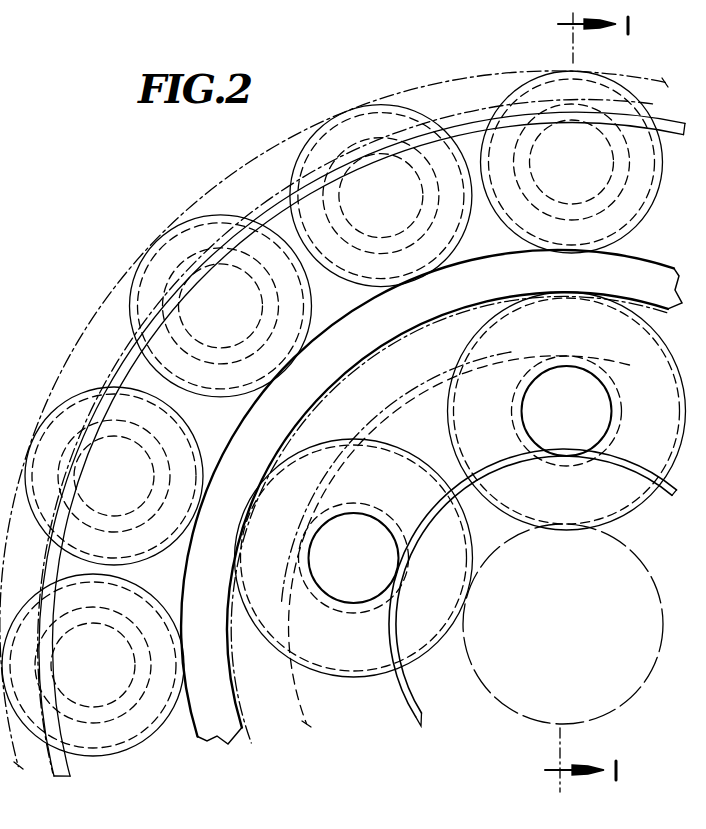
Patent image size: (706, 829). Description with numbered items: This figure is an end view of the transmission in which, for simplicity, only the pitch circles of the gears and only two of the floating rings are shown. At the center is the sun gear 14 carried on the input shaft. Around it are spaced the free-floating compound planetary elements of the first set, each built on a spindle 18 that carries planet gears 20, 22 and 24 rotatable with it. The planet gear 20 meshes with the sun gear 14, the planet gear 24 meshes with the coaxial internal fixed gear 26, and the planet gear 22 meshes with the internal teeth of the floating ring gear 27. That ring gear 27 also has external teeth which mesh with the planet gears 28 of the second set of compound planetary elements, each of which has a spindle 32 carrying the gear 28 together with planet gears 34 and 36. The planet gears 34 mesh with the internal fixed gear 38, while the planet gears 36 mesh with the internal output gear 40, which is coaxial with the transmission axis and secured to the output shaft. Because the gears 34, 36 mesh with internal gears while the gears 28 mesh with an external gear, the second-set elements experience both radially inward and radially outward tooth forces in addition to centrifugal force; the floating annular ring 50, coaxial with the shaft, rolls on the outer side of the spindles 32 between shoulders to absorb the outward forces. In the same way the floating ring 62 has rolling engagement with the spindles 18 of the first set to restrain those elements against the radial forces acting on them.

The sun gear 14 is at (640, 590).
The spindle 18 is at (613, 411).
The planet gear 20 is at (490, 323).
The planet gear 22 is at (584, 375).
The planet gear 24 is at (445, 380).
The internal fixed gear 26 is at (436, 305).
The floating ring gear 27 is at (352, 303).
The planet gear 28 is at (343, 116).
The spindle 32 is at (583, 192).
The planet gear 34 is at (507, 232).
The planet gear 36 is at (537, 83).
The internal fixed gear 38 is at (463, 108).
The internal output gear 40 is at (108, 295).
The floating annular ring 50 is at (253, 213).
The floating ring 62 is at (507, 510).